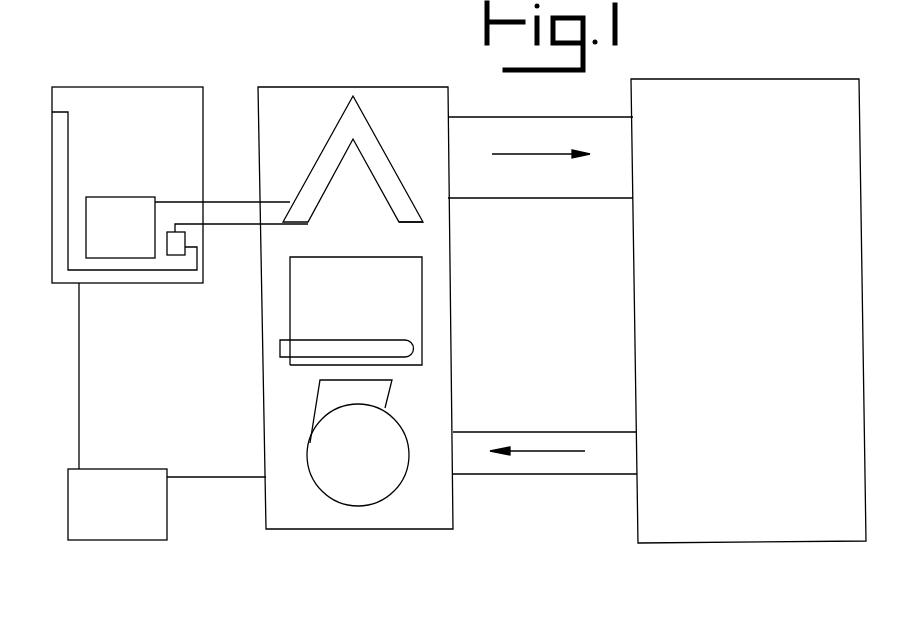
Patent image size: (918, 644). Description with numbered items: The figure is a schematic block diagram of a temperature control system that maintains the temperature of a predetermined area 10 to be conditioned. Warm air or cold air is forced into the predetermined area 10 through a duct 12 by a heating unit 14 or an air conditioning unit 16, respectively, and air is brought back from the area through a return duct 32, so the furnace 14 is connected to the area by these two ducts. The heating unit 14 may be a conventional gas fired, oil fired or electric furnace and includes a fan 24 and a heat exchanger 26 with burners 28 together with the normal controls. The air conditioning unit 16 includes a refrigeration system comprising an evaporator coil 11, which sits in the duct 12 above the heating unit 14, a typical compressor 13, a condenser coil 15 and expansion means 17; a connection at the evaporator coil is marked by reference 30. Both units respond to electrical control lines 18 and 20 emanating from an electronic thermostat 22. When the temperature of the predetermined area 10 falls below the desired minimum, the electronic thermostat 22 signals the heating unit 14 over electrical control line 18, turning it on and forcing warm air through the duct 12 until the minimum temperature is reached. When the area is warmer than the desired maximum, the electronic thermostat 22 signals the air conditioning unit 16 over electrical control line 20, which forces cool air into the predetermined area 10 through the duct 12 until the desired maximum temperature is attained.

The predetermined area 10 is at (722, 77).
The evaporator coil 11 is at (336, 128).
The duct 12 is at (520, 199).
The compressor 13 is at (88, 247).
The heating unit 14 is at (258, 315).
The condenser coil 15 is at (62, 173).
The air conditioning unit 16 is at (160, 92).
The expansion means 17 is at (176, 254).
The electrical control line 18 is at (217, 478).
The electrical control line 20 is at (78, 358).
The electronic thermostat 22 is at (125, 542).
The fan 24 is at (363, 500).
The heat exchanger 26 is at (422, 295).
The burners 28 is at (395, 357).
The coil outlet 30 is at (423, 209).
The return duct 32 is at (550, 475).